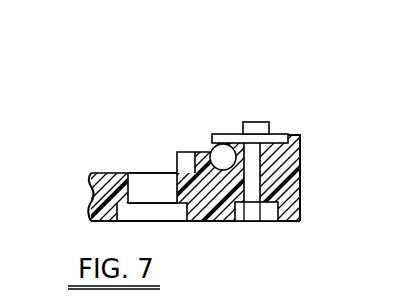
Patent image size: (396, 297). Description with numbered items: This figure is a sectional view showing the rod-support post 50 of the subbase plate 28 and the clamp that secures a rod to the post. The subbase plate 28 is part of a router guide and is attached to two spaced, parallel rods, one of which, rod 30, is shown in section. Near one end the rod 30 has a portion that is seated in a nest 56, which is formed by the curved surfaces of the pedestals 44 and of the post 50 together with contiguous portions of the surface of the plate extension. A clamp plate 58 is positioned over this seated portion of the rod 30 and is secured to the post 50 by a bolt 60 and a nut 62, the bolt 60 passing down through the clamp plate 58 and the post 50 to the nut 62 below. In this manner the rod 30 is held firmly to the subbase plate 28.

The subbase plate 28 is at (103, 170).
The rod 30 is at (222, 156).
The pedestals 44 is at (185, 160).
The rod-support post 50 is at (302, 148).
The nest 56 is at (190, 146).
The clamp plate 58 is at (226, 134).
The bolt 60 is at (262, 125).
The nut 62 is at (273, 212).